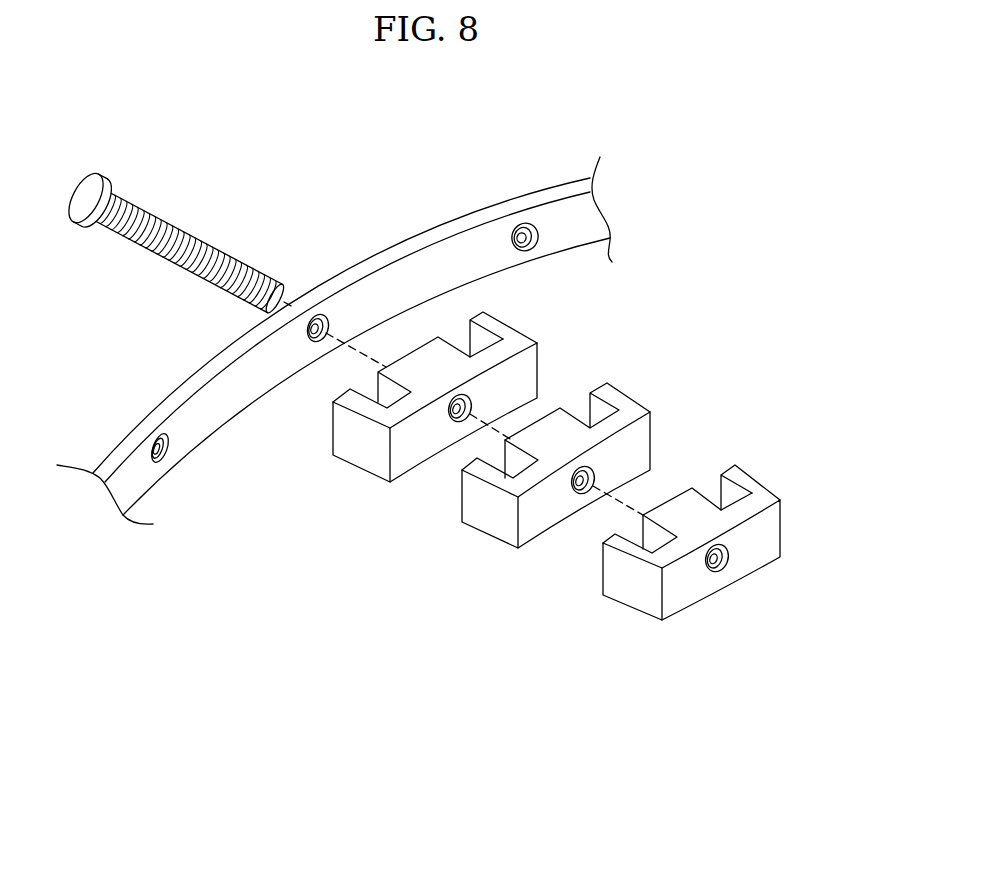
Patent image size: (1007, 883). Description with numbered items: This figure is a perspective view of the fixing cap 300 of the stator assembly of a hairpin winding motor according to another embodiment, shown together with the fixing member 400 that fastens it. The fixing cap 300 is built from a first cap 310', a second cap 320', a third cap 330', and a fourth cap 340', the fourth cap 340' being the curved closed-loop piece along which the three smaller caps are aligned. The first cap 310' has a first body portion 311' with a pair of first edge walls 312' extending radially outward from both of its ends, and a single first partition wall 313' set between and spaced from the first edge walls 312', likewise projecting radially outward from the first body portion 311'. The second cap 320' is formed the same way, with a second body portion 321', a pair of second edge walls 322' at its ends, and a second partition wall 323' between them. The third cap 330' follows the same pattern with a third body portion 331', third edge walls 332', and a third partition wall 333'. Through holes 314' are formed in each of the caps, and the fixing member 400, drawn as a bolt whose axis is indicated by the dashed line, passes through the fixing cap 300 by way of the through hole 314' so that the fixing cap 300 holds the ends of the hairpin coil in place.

The fixing cap 300 is at (587, 518).
The first cap 310' is at (722, 478).
The first body portion 311' is at (722, 510).
The first edge wall 312' is at (753, 450).
The first partition wall 313' is at (677, 468).
The through hole 314' is at (493, 502).
The second cap 320' is at (498, 533).
The second body portion 321' is at (556, 529).
The second edge wall 322' is at (442, 520).
The second partition wall 323' is at (528, 503).
The third cap 330' is at (537, 382).
The third body portion 331' is at (506, 409).
The third edge wall 332' is at (557, 321).
The third partition wall 333' is at (497, 361).
The fourth cap 340' is at (334, 340).
The fixing member 400 is at (143, 191).